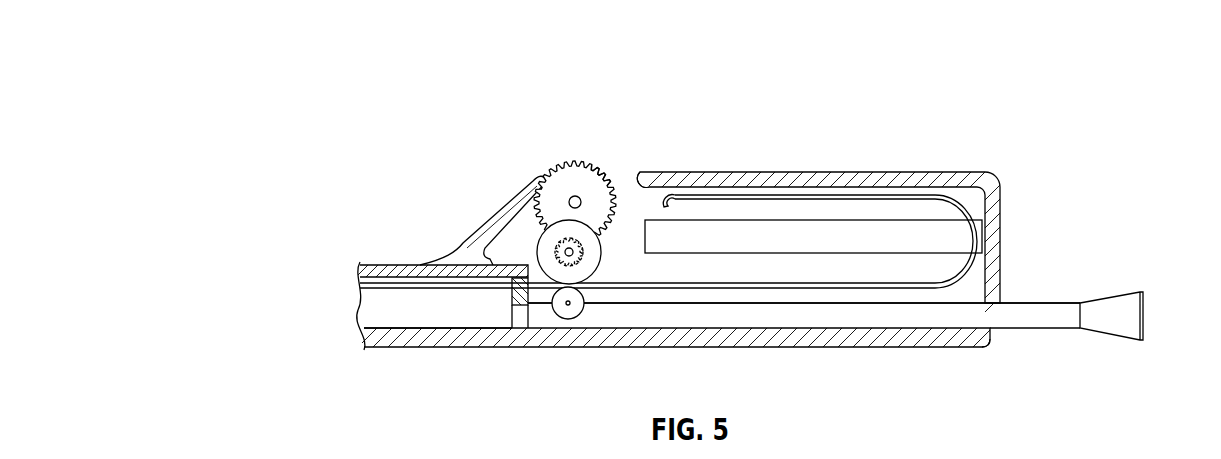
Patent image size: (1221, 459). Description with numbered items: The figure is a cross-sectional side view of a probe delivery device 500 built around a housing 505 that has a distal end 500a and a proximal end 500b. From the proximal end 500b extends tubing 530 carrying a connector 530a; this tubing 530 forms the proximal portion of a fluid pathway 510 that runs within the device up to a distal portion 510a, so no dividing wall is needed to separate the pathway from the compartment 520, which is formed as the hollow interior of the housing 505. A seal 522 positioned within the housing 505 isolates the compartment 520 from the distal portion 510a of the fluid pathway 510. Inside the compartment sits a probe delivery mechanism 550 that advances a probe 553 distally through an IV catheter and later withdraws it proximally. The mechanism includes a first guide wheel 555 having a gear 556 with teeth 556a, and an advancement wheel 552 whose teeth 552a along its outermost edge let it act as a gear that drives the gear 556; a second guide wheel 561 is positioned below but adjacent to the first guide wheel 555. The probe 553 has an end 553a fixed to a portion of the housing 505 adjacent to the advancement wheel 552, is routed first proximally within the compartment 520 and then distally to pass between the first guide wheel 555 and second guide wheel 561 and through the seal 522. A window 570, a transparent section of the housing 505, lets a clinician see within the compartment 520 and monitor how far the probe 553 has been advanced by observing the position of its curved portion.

The probe delivery device 500 is at (1050, 88).
The distal end 500a is at (361, 364).
The proximal end 500b is at (1003, 362).
The housing 505 is at (880, 334).
The fluid pathway 510 is at (722, 319).
The distal portion of fluid pathway 510a is at (384, 319).
The compartment 520 is at (638, 220).
The seal 522 is at (526, 306).
The tubing 530 is at (1013, 294).
The connector 530a is at (1113, 265).
The probe delivery mechanism 550 is at (628, 89).
The advancement wheel 552 is at (573, 151).
The teeth 552a is at (590, 163).
The probe 553 is at (377, 270).
The end of probe 553a is at (677, 210).
The first guide wheel 555 is at (593, 256).
The gear 556 is at (516, 182).
The teeth 556a is at (556, 240).
The second guide wheel 561 is at (570, 319).
The window 570 is at (837, 228).